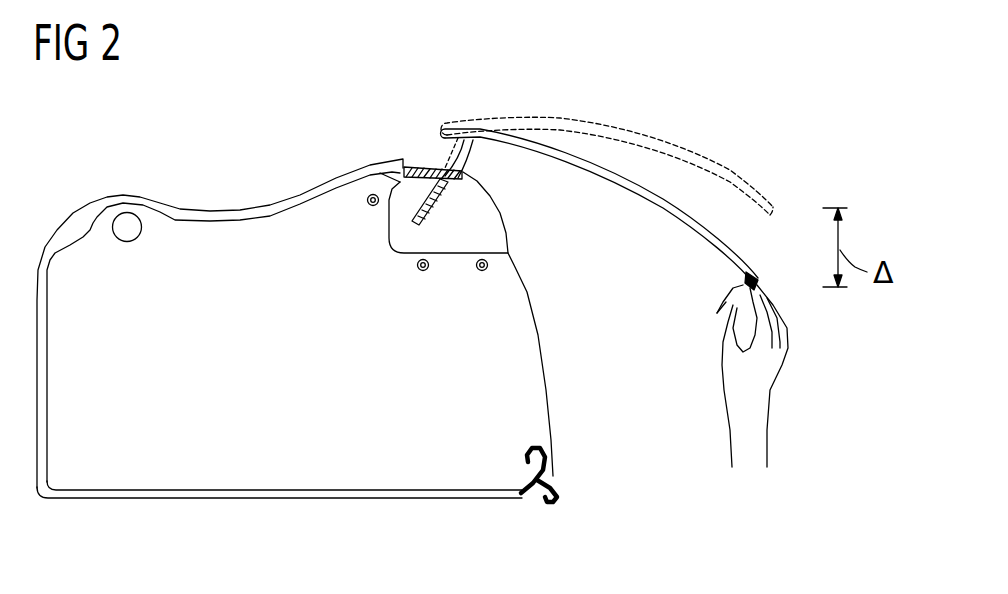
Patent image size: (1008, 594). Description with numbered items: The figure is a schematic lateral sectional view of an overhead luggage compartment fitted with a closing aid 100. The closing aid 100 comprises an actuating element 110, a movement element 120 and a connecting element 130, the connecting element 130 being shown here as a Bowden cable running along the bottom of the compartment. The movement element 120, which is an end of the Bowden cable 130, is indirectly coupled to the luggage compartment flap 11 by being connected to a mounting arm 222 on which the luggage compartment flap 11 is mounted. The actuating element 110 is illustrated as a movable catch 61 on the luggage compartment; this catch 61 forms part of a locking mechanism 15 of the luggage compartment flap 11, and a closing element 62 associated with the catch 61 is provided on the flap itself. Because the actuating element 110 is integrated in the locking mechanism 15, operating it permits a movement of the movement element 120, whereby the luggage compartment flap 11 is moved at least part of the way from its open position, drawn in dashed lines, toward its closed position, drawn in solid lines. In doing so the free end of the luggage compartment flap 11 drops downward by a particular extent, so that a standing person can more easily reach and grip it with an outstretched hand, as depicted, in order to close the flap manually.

The closing aid 100 is at (295, 346).
The connecting element 130 is at (437, 496).
The movement element 120 is at (415, 158).
The mounting arm 222 is at (482, 161).
The luggage compartment flap 11 is at (773, 207).
The locking mechanism 15 is at (730, 277).
The closing element 62 is at (740, 286).
The catch 61 is at (607, 505).
The actuating element 110 is at (563, 493).